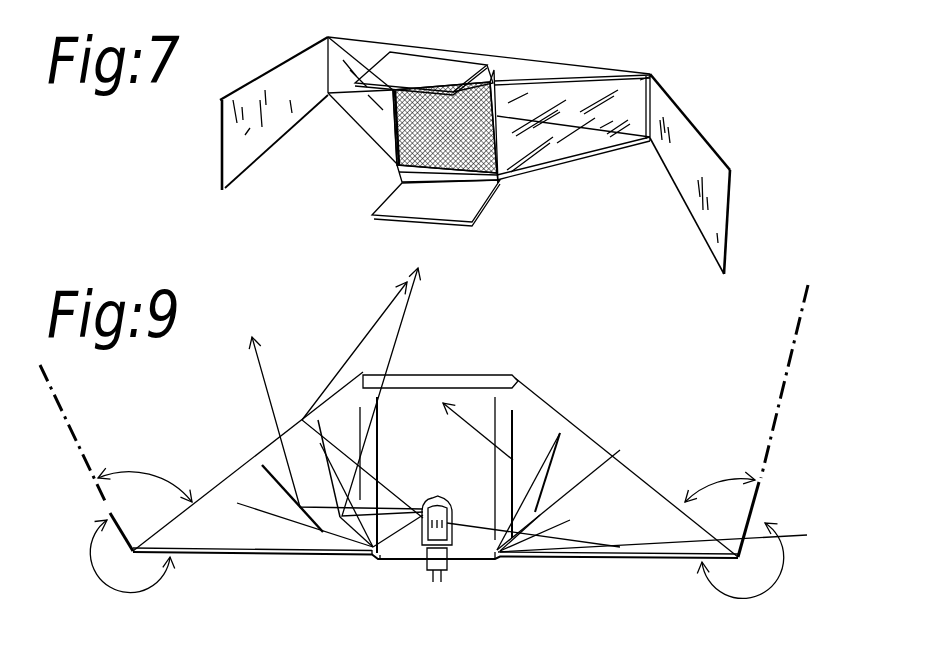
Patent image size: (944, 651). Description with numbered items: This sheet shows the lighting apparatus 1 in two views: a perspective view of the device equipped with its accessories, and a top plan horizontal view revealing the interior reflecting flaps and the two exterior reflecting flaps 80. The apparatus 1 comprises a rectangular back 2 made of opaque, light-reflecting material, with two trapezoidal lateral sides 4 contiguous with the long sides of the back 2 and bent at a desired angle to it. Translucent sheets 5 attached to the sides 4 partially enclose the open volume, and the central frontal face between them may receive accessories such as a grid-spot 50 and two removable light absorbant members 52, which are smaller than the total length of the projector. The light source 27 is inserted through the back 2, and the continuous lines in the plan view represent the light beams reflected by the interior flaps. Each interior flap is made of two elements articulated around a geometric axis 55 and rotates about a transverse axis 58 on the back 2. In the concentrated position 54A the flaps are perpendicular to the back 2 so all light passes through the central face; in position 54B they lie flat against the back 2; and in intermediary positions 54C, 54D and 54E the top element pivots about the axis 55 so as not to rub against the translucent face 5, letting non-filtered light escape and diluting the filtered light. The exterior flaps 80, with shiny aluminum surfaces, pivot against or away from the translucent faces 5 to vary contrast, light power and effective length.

In FIG. 7, the lighting apparatus 1 is at (513, 48).
In FIG. 9, the lighting apparatus 1 is at (488, 370).
In FIG. 7, the rectangular back 2 is at (623, 100).
In FIG. 7, the lateral sides 4 is at (543, 72).
In FIG. 9, the translucent sheets 5 is at (235, 473).
In FIG. 9, the light source 27 is at (440, 497).
In FIG. 7, the grid-spot 50 is at (393, 133).
In FIG. 9, the grid-spot 50 is at (436, 378).
In FIG. 7, the light absorbant members 52 is at (415, 63).
In FIG. 9, the concentrated position of reflecting flaps 54A is at (500, 404).
In FIG. 9, the flat position of reflecting flaps 54B is at (285, 556).
In FIG. 9, the intermediary angular position of reflecting flaps 54C is at (353, 437).
In FIG. 9, the intermediary angular position of reflecting flaps 54D is at (275, 467).
In FIG. 9, the lower inclined reflector panel 54E is at (258, 518).
In FIG. 9, the geometric axis 55 is at (327, 533).
In FIG. 9, the transverse axis 58 is at (375, 556).
In FIG. 7, the exterior reflecting flaps 80 is at (247, 123).
In FIG. 9, the exterior reflecting flaps 80 is at (57, 397).